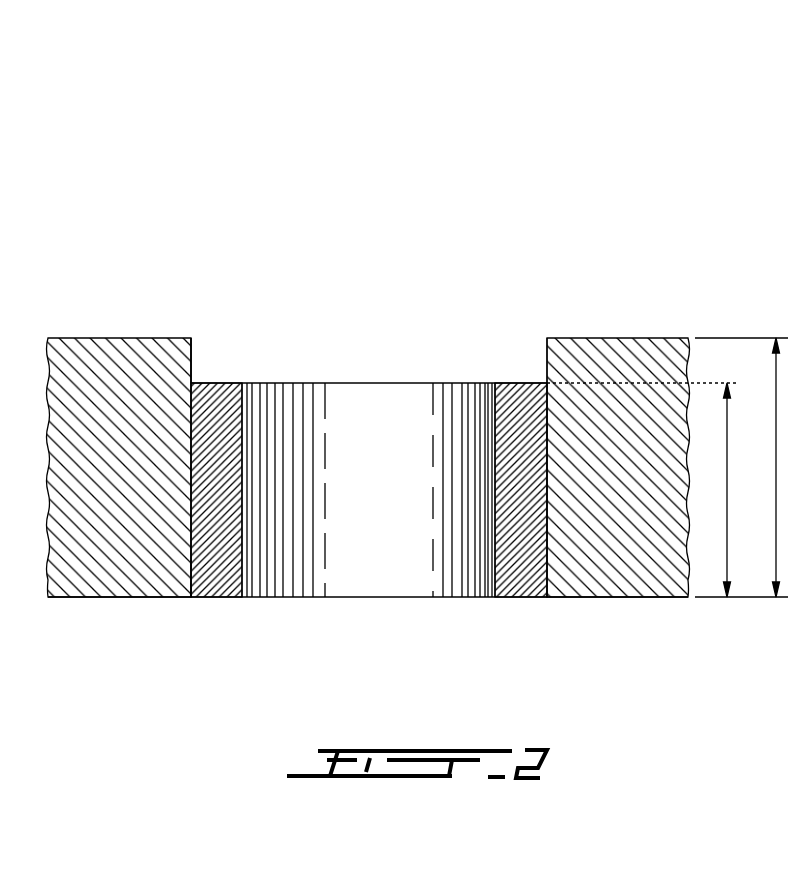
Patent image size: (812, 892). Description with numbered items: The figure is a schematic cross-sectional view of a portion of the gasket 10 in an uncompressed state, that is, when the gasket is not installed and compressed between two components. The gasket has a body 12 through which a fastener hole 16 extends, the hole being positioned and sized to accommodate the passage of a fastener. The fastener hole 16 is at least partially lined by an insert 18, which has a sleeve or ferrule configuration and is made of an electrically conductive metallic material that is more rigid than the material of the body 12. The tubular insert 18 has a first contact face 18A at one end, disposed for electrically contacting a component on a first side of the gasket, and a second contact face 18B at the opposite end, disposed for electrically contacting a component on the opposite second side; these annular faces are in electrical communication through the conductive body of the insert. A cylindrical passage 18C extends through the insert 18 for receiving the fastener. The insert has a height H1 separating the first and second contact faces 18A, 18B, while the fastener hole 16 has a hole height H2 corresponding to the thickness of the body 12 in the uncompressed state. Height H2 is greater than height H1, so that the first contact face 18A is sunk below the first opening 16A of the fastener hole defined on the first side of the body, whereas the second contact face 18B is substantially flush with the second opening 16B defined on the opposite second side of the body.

The gasket 10 is at (221, 158).
The body 12 is at (632, 362).
The fastener hole 16 is at (340, 340).
The first opening 16A is at (190, 338).
The second opening 16B is at (190, 597).
The insert 18 is at (497, 542).
The first contact face 18A is at (515, 383).
The second contact face 18B is at (518, 597).
The passage 18C is at (391, 496).
The height of insert H1 is at (645, 490).
The hole height H2 is at (744, 467).